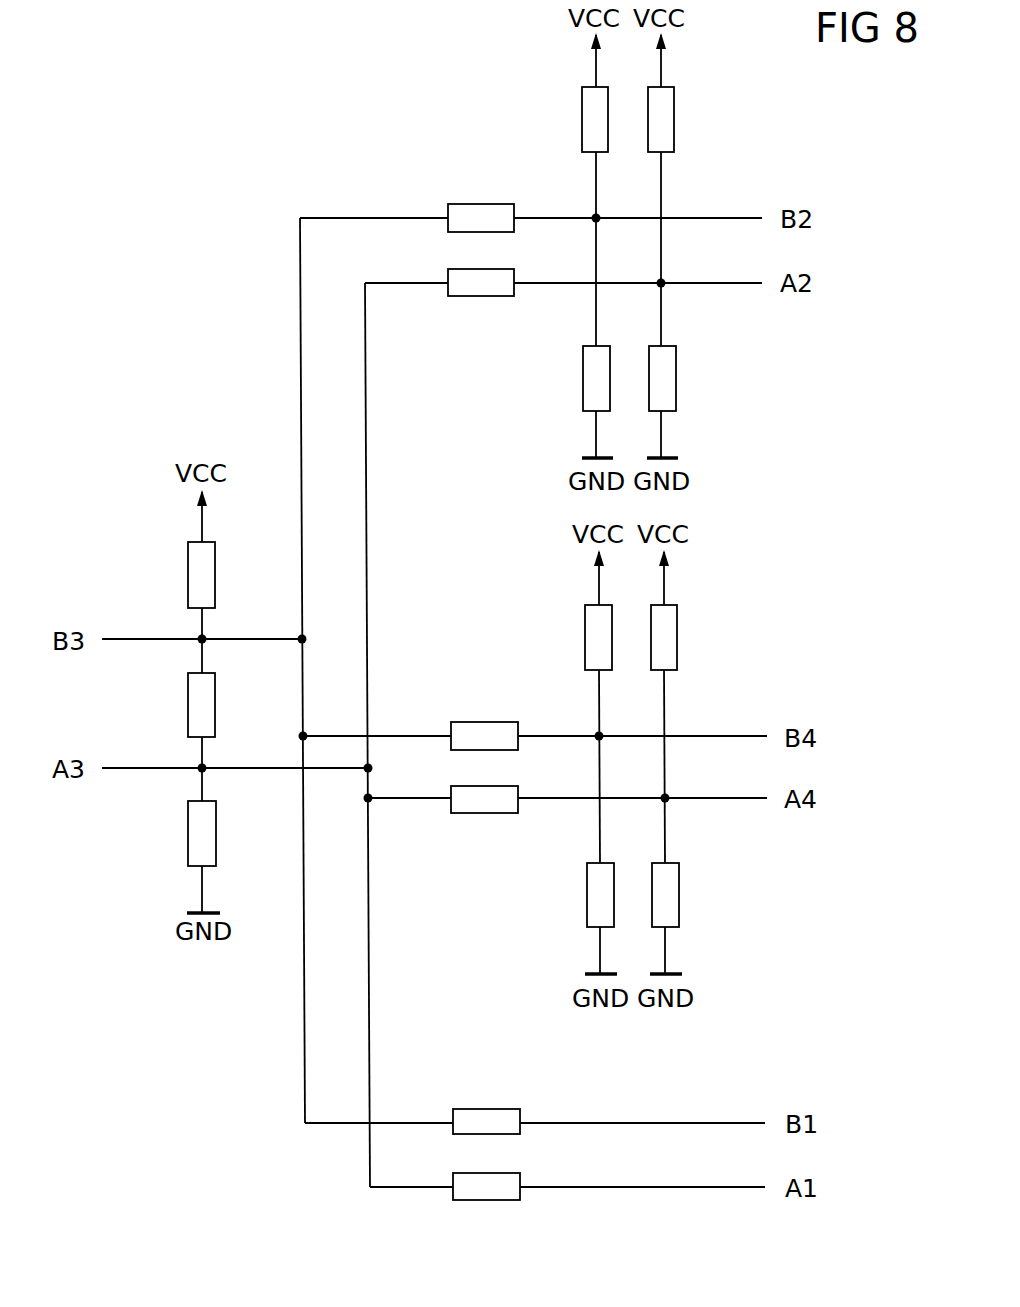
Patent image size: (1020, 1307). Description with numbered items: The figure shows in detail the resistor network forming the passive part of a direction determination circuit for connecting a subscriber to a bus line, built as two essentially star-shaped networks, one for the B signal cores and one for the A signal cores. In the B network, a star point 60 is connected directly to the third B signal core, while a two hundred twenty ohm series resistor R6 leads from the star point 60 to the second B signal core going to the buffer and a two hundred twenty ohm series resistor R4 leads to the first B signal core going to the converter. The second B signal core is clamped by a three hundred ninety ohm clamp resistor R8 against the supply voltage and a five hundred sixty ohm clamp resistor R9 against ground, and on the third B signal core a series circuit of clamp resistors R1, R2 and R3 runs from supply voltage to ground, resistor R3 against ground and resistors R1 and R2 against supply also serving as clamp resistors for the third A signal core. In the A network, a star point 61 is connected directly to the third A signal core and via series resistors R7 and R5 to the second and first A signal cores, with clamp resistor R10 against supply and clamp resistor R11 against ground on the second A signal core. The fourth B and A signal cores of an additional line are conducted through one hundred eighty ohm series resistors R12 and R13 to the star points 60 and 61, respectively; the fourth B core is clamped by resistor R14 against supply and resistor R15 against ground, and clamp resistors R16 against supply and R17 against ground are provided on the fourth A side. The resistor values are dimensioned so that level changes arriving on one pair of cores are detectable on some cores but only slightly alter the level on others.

The clamp resistor R1 is at (184, 575).
The clamp resistor R2 is at (184, 705).
The clamp resistor R3 is at (184, 833).
The series resistor R4 is at (486, 1102).
The series resistor R5 is at (486, 1208).
The series resistor R6 is at (481, 199).
The series resistor R7 is at (481, 304).
The clamp resistor R8 is at (576, 119).
The clamp resistor R9 is at (577, 378).
The clamp resistor R10 is at (688, 119).
The clamp resistor R11 is at (689, 378).
The series resistor R12 is at (484, 718).
The series resistor R13 is at (484, 818).
The clamp resistor R14 is at (572, 637).
The clamp resistor R15 is at (573, 895).
The clamp resistor R16 is at (691, 637).
The clamp resistor R17 is at (692, 895).
The star point 60 is at (301, 638).
The star point 61 is at (369, 799).